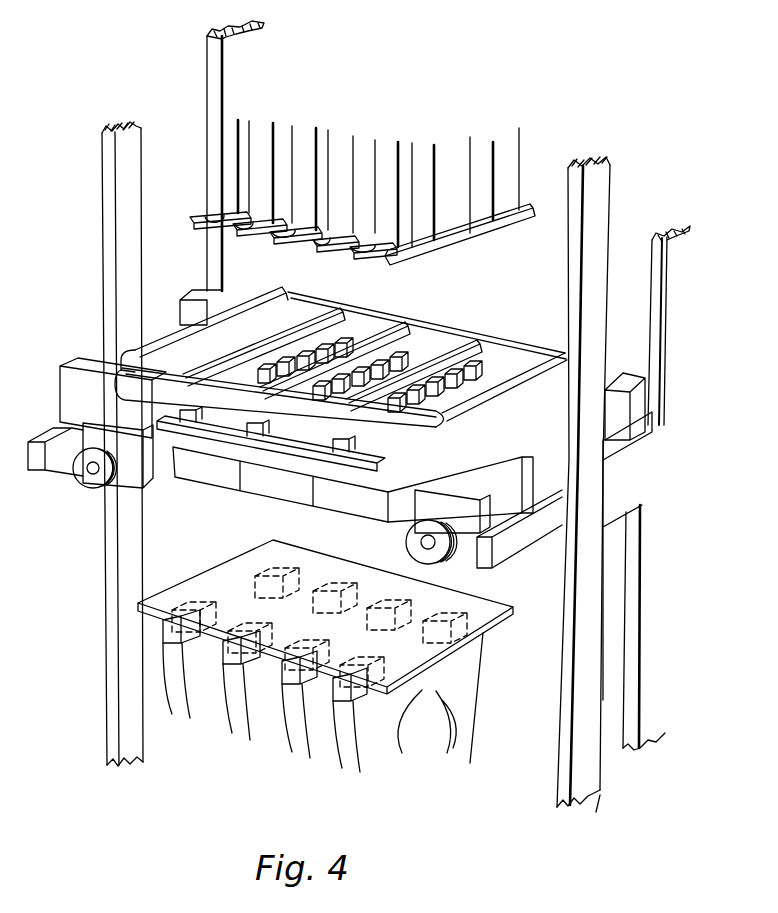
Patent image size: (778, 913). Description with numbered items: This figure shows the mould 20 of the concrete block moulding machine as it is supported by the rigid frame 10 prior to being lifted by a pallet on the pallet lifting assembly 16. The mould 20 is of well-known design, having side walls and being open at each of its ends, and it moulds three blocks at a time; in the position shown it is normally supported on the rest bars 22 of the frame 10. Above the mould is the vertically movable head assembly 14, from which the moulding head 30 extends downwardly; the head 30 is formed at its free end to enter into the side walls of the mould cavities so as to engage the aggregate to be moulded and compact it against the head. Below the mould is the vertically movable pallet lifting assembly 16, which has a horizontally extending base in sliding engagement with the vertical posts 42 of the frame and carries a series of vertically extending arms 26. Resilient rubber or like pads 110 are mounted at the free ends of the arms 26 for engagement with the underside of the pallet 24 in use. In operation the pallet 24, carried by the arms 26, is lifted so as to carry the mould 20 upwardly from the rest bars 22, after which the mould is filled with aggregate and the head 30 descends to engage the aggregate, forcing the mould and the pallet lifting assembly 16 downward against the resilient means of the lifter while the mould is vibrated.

The rigid frame 10 is at (667, 736).
The head assembly 14 is at (531, 133).
The pallet lifting assembly 16 is at (205, 762).
The mould 20 is at (213, 472).
The rest bars 22 is at (53, 462).
The pallet 24 is at (500, 621).
The arms 26 is at (468, 722).
The moulding head 30 is at (498, 228).
The vertical posts 42 is at (106, 157).
The resilient pads 110 is at (233, 642).